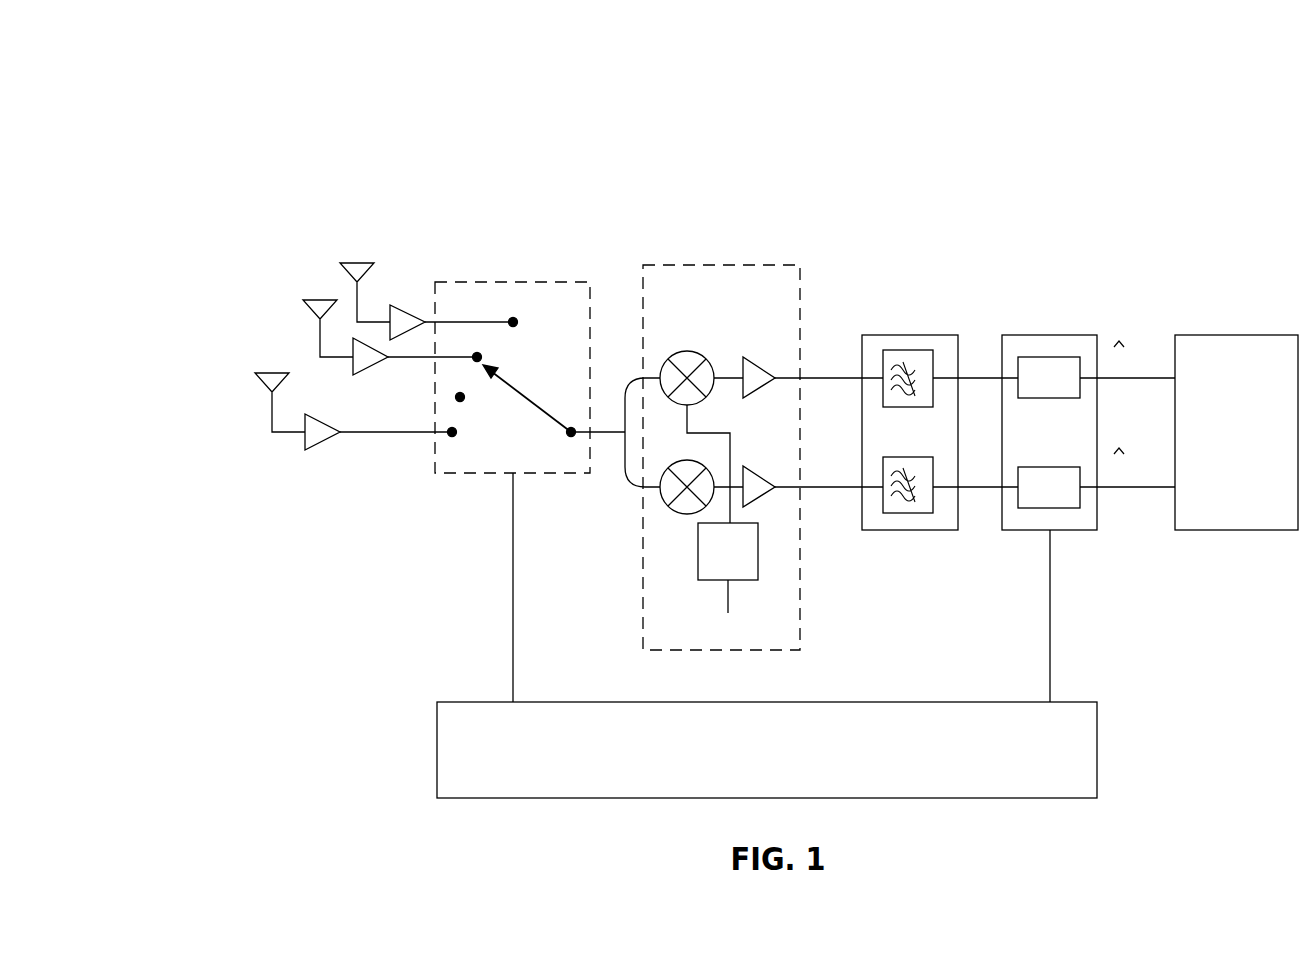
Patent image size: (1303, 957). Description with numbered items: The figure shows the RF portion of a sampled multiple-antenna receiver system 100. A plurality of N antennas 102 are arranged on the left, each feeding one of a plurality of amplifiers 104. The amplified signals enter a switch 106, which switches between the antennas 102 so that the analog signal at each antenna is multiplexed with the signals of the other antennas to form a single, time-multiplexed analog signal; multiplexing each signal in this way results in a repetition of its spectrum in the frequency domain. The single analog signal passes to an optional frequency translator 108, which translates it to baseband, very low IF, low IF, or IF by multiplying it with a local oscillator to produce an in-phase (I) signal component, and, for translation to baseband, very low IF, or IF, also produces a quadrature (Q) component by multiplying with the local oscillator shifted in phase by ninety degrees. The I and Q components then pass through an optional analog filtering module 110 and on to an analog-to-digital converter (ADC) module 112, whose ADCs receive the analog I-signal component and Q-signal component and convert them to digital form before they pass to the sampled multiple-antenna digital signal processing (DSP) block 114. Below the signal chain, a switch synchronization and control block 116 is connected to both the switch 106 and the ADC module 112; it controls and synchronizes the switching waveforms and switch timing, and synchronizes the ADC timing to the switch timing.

The sampled multiple-antenna receiver system 100 is at (320, 72).
The antennas 102 is at (275, 248).
The amplifiers 104 is at (310, 464).
The switch 106 is at (500, 281).
The frequency translator 108 is at (770, 263).
The analog filtering module 110 is at (885, 334).
The analog-to-digital converter (ADC) module 112 is at (1037, 334).
The sampled multiple-antenna digital signal processing (DSP) block 114 is at (1226, 466).
The switch synchronization and control block 116 is at (749, 766).